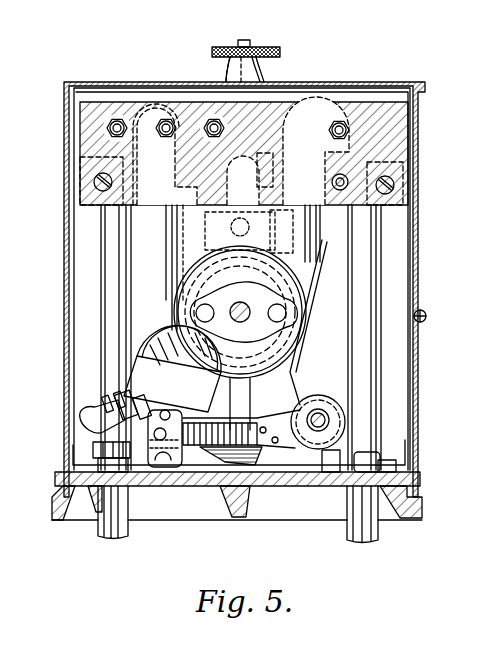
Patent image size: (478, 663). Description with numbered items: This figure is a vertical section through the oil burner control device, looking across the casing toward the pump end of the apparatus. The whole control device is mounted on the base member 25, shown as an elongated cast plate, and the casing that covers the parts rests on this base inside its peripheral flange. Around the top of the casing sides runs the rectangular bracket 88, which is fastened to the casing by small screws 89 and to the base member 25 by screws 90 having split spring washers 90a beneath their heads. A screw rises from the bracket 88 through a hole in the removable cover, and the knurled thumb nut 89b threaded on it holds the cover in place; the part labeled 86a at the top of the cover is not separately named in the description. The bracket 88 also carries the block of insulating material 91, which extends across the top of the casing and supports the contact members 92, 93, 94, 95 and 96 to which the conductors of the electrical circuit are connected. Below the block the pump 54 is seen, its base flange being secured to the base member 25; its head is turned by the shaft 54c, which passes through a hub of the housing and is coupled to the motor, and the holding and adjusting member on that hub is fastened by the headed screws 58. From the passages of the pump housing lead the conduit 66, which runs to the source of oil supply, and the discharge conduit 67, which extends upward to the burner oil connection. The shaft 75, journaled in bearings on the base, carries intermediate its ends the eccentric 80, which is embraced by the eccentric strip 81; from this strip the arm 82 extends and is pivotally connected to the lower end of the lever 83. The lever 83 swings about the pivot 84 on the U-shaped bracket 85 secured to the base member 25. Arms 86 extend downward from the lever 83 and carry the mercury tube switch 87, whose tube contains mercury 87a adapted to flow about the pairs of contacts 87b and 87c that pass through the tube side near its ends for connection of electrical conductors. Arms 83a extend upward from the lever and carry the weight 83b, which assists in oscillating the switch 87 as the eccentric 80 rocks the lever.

The base member 25 is at (423, 515).
The pump 54 is at (305, 258).
The shaft 54c is at (238, 321).
The headed screws 58 is at (290, 316).
The conduit 66 is at (373, 380).
The conduit 67 is at (115, 284).
The shaft 75 is at (300, 437).
The eccentric 80 is at (306, 405).
The eccentric strip 81 is at (337, 463).
The arm 82 is at (243, 419).
The lever 83 is at (174, 424).
The arms 83a is at (167, 388).
The weight 83b is at (163, 341).
The pivot 84 is at (220, 425).
The bracket 85 is at (143, 466).
The arms 86 is at (108, 408).
The knob 86a is at (250, 44).
The mercury tube switch 87 is at (88, 436).
The mercury 87a is at (204, 462).
The contacts 87b is at (90, 414).
The contacts 87c is at (235, 463).
The rectangular bracket 88 is at (408, 243).
The small screws 89 is at (424, 316).
The knurled thumb nut 89b is at (281, 53).
The screws 90 is at (384, 455).
The split spring washers 90a is at (405, 466).
The block of insulating material 91 is at (398, 118).
The contact member 92 is at (117, 118).
The contact member 93 is at (166, 118).
The contact member 94 is at (214, 118).
The contact member 95 is at (339, 120).
The contact member 96 is at (337, 198).